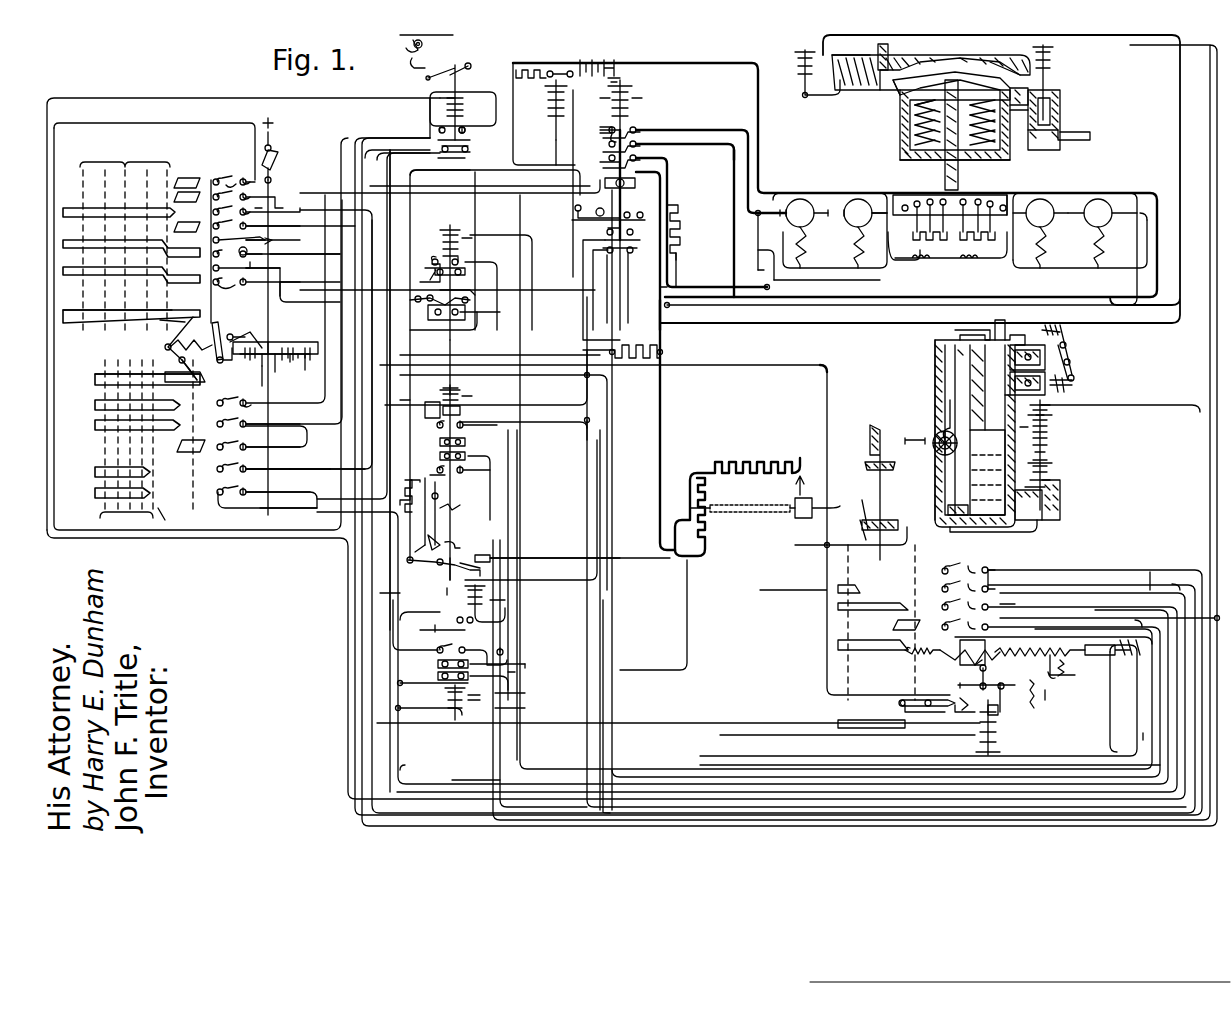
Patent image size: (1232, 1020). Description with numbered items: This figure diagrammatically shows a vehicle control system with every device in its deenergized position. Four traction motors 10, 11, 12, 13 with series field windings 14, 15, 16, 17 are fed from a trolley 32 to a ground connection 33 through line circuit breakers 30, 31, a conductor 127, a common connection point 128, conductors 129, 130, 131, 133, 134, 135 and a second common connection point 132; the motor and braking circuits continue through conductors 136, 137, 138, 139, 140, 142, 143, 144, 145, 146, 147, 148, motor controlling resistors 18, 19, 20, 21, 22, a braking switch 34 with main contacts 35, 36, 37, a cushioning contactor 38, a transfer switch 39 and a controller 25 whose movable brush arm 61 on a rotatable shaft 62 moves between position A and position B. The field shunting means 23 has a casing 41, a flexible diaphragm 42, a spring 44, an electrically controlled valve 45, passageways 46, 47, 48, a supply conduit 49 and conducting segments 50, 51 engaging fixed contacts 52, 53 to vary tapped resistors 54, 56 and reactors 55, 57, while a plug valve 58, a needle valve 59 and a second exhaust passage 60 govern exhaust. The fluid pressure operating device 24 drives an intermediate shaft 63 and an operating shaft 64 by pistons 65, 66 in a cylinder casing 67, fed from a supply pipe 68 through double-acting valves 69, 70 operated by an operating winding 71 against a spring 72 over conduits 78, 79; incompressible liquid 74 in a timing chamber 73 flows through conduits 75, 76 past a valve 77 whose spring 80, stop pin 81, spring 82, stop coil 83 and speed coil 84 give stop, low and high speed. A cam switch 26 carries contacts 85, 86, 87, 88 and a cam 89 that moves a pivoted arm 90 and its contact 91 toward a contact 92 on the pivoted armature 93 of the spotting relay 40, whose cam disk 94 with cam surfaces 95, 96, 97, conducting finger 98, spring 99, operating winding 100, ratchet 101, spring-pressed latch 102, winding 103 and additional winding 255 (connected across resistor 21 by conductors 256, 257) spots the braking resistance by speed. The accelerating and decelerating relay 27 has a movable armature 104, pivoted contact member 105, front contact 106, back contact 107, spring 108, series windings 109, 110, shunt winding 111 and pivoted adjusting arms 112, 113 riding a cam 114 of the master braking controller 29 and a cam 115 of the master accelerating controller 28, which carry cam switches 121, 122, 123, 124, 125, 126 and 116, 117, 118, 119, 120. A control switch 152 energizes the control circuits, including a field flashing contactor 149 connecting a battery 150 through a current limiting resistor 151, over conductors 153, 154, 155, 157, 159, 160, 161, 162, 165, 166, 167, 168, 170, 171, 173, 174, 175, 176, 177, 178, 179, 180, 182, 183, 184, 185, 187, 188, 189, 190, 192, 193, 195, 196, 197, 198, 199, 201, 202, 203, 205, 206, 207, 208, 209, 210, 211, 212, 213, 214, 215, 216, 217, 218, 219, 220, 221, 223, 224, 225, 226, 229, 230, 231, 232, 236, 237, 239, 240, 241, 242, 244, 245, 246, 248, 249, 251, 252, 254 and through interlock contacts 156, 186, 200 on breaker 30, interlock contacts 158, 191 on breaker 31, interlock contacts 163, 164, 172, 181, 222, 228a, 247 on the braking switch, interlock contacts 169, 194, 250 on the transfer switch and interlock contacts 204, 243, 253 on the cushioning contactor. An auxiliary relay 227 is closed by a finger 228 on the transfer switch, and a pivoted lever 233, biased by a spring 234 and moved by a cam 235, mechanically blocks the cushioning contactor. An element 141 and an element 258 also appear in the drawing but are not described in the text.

The traction motor 10 is at (1102, 213).
The traction motor 11 is at (1040, 213).
The traction motor 12 is at (857, 213).
The traction motor 13 is at (804, 213).
The series field winding 14 is at (1103, 237).
The series field winding 15 is at (1050, 235).
The series field winding 16 is at (855, 235).
The series field winding 17 is at (795, 235).
The motor controlling resistor 18 is at (748, 462).
The motor controlling resistor 19 is at (700, 530).
The motor controlling resistor 20 is at (426, 500).
The motor controlling resistor 21 is at (632, 345).
The motor controlling resistor 22 is at (684, 232).
The field shunting means 23 is at (888, 136).
The fluid pressure operating device 24 is at (1022, 420).
The controller 25 is at (742, 500).
The cam switch 26 is at (845, 608).
The accelerating and decelerating relay 27 is at (278, 324).
The master accelerating controller 28 is at (92, 450).
The master braking controller 29 is at (82, 200).
The line circuit breaker 30 is at (460, 85).
The line circuit breaker 31 is at (438, 290).
The trolley 32 is at (420, 47).
The ground connection 33 is at (282, 372).
The braking switch 34 is at (630, 125).
The main contact 35 is at (610, 125).
The main contact 36 is at (600, 148).
The main contact 37 is at (605, 170).
The cushioning contactor 38 is at (448, 409).
The transfer switch 39 is at (446, 566).
The spotting relay 40 is at (1060, 698).
The casing 41 is at (900, 148).
The flexible diaphragm 42 is at (900, 96).
The spring 44 is at (912, 110).
The electrically controlled valve 45 is at (1045, 78).
The passageway 46 is at (1018, 120).
The passageway 47 is at (1010, 58).
The passageway 48 is at (865, 62).
The supply conduit 49 is at (1080, 130).
The conducting segment 50 is at (903, 190).
The conducting segment 51 is at (1005, 192).
The fixed contacts 52 is at (943, 198).
The fixed contacts 53 is at (990, 198).
The tapped resistor 54 is at (936, 228).
The reactor 55 is at (940, 250).
The tapped resistor 56 is at (965, 230).
The reactor 57 is at (960, 265).
The plug valve 58 is at (800, 80).
The needle valve 59 is at (888, 48).
The second exhaust passage 60 is at (885, 85).
The movable brush arm 61 is at (795, 488).
The rotatable shaft 62 is at (812, 506).
The intermediate shaft 63 is at (878, 476).
The operating shaft 64 is at (915, 440).
The piston 65 is at (950, 415).
The piston 66 is at (945, 510).
The cylinder casing 67 is at (935, 375).
The supply pipe 68 is at (990, 325).
The double-acting valve 69 is at (1032, 338).
The double-acting valve 70 is at (1030, 362).
The operating winding 71 is at (1060, 388).
The spring 72 is at (1040, 330).
The timing chamber 73 is at (982, 380).
The incompressible liquid 74 is at (975, 445).
The conduit 75 is at (1025, 478).
The conduit 76 is at (1035, 530).
The valve 77 is at (1062, 500).
The conduit 78 is at (950, 330).
The conduit 79 is at (1008, 395).
The spring 80 is at (1044, 481).
The stop pin 81 is at (1042, 443).
The spring 82 is at (1040, 410).
The stop coil 83 is at (1042, 465).
The speed coil 84 is at (1040, 428).
The contacts 85 is at (960, 566).
The contacts 86 is at (960, 586).
The contacts 87 is at (960, 604).
The contacts 88 is at (960, 624).
The cam 89 is at (898, 702).
The pivoted arm 90 is at (950, 703).
The contact 91 is at (962, 698).
The contact 92 is at (958, 686).
The pivoted armature 93 is at (1035, 686).
The cam disk 94 is at (960, 642).
The cam surface 95 is at (1030, 650).
The cam surface 96 is at (983, 670).
The cam surface 97 is at (942, 654).
The conducting finger 98 is at (985, 664).
The spring 99 is at (912, 656).
The operating winding 100 is at (1118, 660).
The ratchet 101 is at (1048, 662).
The spring-pressed latch 102 is at (1065, 663).
The winding 103 is at (1000, 714).
The movable armature 104 is at (262, 358).
The pivoted contact member 105 is at (212, 355).
The front contact 106 is at (200, 336).
The back contact 107 is at (230, 333).
The spring 108 is at (198, 330).
The series winding 109 is at (296, 355).
The series winding 110 is at (283, 338).
The shunt winding 111 is at (248, 355).
The pivoted adjusting arm 112 is at (178, 322).
The pivoted adjusting arm 113 is at (178, 362).
The cam 114 is at (85, 312).
The cam 115 is at (105, 378).
The cam switch 116 is at (220, 403).
The cam switch 117 is at (246, 415).
The cam switch 118 is at (220, 445).
The cam switch 119 is at (220, 467).
The cam switch 120 is at (244, 487).
The cam switch 121 is at (236, 176).
The cam switch 122 is at (244, 197).
The cam switch 123 is at (210, 225).
The cam switch 124 is at (210, 250).
The cam switch 125 is at (210, 278).
The cam switch 126 is at (242, 278).
The conductor 127 is at (644, 62).
The common connection point 128 is at (757, 222).
The conductor 129 is at (762, 212).
The conductor 130 is at (877, 220).
The conductor 131 is at (770, 272).
The second common connection point 132 is at (764, 285).
The conductor 133 is at (757, 252).
The conductor 134 is at (1026, 220).
The conductor 135 is at (1133, 210).
The conductor 136 is at (698, 285).
The conductor 137 is at (410, 345).
The conductor 138 is at (428, 565).
The conductor 139 is at (775, 363).
The conductor 140 is at (262, 372).
The conductor 141 is at (543, 555).
The conductor 142 is at (718, 170).
The conductor 143 is at (680, 262).
The conductor 144 is at (834, 190).
The conductor 145 is at (540, 165).
The conductor 146 is at (473, 355).
The conductor 147 is at (660, 288).
The conductor 148 is at (715, 305).
The field flashing contactor 149 is at (550, 115).
The battery 150 is at (598, 76).
The current limiting resistor 151 is at (520, 78).
The control switch 152 is at (280, 150).
The conductor 153 is at (275, 175).
The conductor 154 is at (300, 244).
The conductor 155 is at (306, 452).
The interlock contacts 156 is at (662, 395).
The conductor 157 is at (482, 200).
The interlock contacts 158 is at (460, 270).
The conductor 159 is at (577, 262).
The conductor 160 is at (566, 135).
The conductor 161 is at (592, 120).
The conductor 162 is at (575, 205).
The interlock contact 163 is at (600, 205).
The interlock contact 164 is at (625, 212).
The conductor 165 is at (580, 240).
The conductor 166 is at (555, 375).
The conductor 167 is at (400, 405).
The conductor 168 is at (435, 660).
The interlock contacts 169 is at (448, 673).
The conductor 170 is at (495, 750).
The conductor 171 is at (1198, 510).
The interlock contact 172 is at (640, 212).
The conductor 173 is at (312, 193).
The conductor 174 is at (306, 200).
The conductor 175 is at (826, 643).
The conductor 176 is at (850, 542).
The conductor 177 is at (262, 248).
The conductor 178 is at (272, 270).
The conductor 179 is at (282, 290).
The conductor 180 is at (290, 405).
The interlock contacts 181 is at (630, 184).
The conductor 182 is at (540, 178).
The conductor 183 is at (432, 94).
The conductor 184 is at (343, 95).
The conductor 185 is at (430, 110).
The interlock contacts 186 is at (466, 125).
The conductor 187 is at (252, 251).
The conductor 188 is at (300, 256).
The conductor 189 is at (282, 428).
The conductor 190 is at (440, 240).
The interlock contacts 191 is at (448, 255).
The conductor 192 is at (488, 258).
The conductor 193 is at (515, 672).
The interlock contacts 194 is at (450, 688).
The conductor 195 is at (412, 682).
The conductor 196 is at (1212, 100).
The conductor 197 is at (256, 458).
The conductor 198 is at (298, 472).
The conductor 199 is at (345, 460).
The interlock contacts 200 is at (445, 163).
The conductor 201 is at (380, 163).
The conductor 202 is at (418, 422).
The conductor 203 is at (440, 392).
The interlock contact 204 is at (466, 417).
The conductor 205 is at (545, 420).
The conductor 206 is at (582, 410).
The conductor 207 is at (355, 485).
The conductor 208 is at (298, 497).
The conductor 209 is at (304, 495).
The conductor 210 is at (405, 350).
The conductor 211 is at (304, 372).
The conductor 212 is at (218, 298).
The conductor 213 is at (168, 125).
The conductor 214 is at (392, 360).
The conductor 215 is at (1148, 620).
The conductor 216 is at (580, 470).
The conductor 217 is at (1000, 570).
The conductor 218 is at (1080, 592).
The conductor 219 is at (435, 708).
The conductor 220 is at (1095, 620).
The conductor 221 is at (610, 255).
The interlock contacts 222 is at (632, 255).
The conductor 223 is at (1100, 38).
The conductor 224 is at (300, 280).
The conductor 225 is at (262, 208).
The conductor 226 is at (295, 215).
The auxiliary relay 227 is at (505, 608).
The finger 228 is at (500, 652).
The interlock contact 228a is at (576, 218).
The conductor 229 is at (603, 428).
The conductor 230 is at (568, 580).
The conductor 231 is at (438, 620).
The conductor 232 is at (380, 593).
The pivoted lever 233 is at (438, 490).
The spring 234 is at (460, 508).
The cam 235 is at (438, 538).
The conductor 236 is at (512, 98).
The conductor 237 is at (500, 342).
The conductor 239 is at (538, 312).
The conductor 240 is at (355, 512).
The conductor 241 is at (632, 668).
The conductor 242 is at (1143, 733).
The interlock contacts 243 is at (440, 442).
The conductor 244 is at (494, 528).
The conductor 245 is at (1150, 572).
The conductor 246 is at (262, 240).
The interlock contacts 247 is at (625, 235).
The conductor 248 is at (580, 288).
The conductor 249 is at (952, 636).
The interlock contacts 250 is at (455, 648).
The conductor 251 is at (515, 660).
The conductor 252 is at (466, 448).
The interlock contacts 253 is at (440, 456).
The conductor 254 is at (420, 595).
The additional winding 255 is at (1000, 755).
The conductor 256 is at (860, 735).
The conductor 257 is at (798, 765).
The contact 258 is at (458, 313).
The position A is at (860, 495).
The position B is at (778, 496).